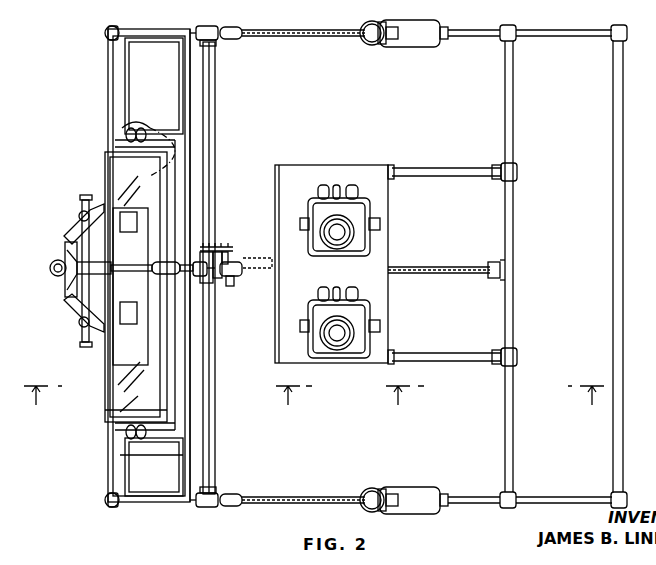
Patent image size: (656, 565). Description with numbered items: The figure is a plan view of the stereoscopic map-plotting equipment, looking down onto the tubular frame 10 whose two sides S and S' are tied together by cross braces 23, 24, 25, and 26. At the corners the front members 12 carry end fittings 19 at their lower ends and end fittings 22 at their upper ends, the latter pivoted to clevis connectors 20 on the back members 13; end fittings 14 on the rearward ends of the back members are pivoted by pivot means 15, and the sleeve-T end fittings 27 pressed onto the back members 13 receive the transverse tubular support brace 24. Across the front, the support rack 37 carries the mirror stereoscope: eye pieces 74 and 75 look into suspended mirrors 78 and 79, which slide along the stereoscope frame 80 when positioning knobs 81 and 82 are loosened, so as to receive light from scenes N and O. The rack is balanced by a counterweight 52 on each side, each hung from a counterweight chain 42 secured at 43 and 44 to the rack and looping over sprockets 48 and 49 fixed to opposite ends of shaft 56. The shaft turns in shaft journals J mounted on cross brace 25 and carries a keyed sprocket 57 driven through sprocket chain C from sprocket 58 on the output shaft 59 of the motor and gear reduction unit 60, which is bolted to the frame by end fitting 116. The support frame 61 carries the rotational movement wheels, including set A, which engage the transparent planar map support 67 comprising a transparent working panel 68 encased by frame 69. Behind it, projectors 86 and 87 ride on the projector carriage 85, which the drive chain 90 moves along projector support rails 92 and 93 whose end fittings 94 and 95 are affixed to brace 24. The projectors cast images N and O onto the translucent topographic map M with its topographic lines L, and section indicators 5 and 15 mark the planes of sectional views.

The section line 5- 5 is at (313, 395).
The frame 10 is at (190, 152).
The front member 12 is at (114, 26).
The back member 13 is at (584, 36).
The end fitting 14 is at (624, 28).
The pivot means 15 is at (350, 401).
The end fitting 19 is at (104, 35).
The clevis connector 20 is at (232, 40).
The end fitting 22 is at (208, 26).
The cross brace 23 is at (623, 300).
The cross brace 24 is at (513, 317).
The cross brace 25 is at (216, 140).
The cross brace 26 is at (108, 493).
The end fitting 27 is at (516, 30).
The support rack 37 is at (76, 224).
The counterweight chain 42 is at (300, 28).
The chain attachment point 43 is at (185, 38).
The chain attachment point 44 is at (184, 505).
The sprocket 48 is at (196, 48).
The sprocket 49 is at (216, 509).
The counterweight 52 is at (424, 50).
The shaft 56 is at (216, 158).
The keyed sprocket 57 is at (212, 246).
The sprocket 58 is at (226, 252).
The output shaft 59 is at (236, 253).
The motor and gear reduction unit 60 is at (271, 297).
The support frame 61 is at (130, 459).
The transparent planar map support 67 is at (116, 380).
The transparent working panel 68 is at (116, 352).
The frame 69 is at (105, 408).
The eye piece 74 is at (58, 266).
The eye piece 75 is at (62, 276).
The mirror 78 is at (72, 232).
The mirror 79 is at (68, 312).
The stereoscope frame 80 is at (84, 200).
The positioning knob 81 is at (76, 210).
The positioning knob 82 is at (74, 330).
The projector carriage 85 is at (425, 300).
The projector 86 is at (356, 362).
The projector 87 is at (340, 190).
The projector carriage drive chain 90 is at (456, 262).
The projector support rail 92 is at (456, 349).
The projector support rail 93 is at (450, 167).
The end fitting 94 is at (518, 367).
The end fitting 95 is at (518, 167).
The end fitting 116 is at (198, 272).
The wheel set A is at (120, 284).
The sprocket chain C is at (246, 236).
The shaft journal J is at (214, 44).
The topographic lines L is at (120, 326).
The translucent topographic map M is at (139, 179).
The image N is at (128, 222).
The image O is at (147, 290).
The side S is at (489, 16).
The side S' is at (470, 480).